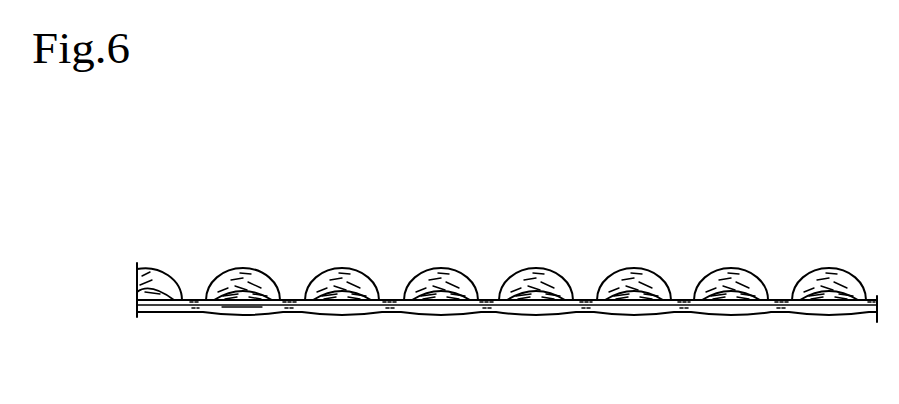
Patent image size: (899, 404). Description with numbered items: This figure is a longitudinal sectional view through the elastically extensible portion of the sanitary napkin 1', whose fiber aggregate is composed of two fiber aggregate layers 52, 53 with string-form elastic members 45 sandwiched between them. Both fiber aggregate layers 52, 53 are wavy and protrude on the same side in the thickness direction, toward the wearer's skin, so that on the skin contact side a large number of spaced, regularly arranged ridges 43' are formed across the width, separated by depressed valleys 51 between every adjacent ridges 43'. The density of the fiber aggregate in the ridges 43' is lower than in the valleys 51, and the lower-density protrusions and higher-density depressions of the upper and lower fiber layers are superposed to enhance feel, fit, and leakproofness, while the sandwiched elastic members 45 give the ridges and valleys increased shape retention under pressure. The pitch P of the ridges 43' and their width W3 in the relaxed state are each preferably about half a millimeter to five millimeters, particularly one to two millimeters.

The sanitary napkin 1' is at (457, 311).
The ridges 43' is at (501, 215).
The elastic members 45 is at (238, 300).
The valleys 51 is at (577, 300).
The fiber aggregate layer 52 is at (531, 290).
The fiber aggregate layer 53 is at (343, 306).
The width of the ridges W3 is at (280, 195).
The pitch of the ridges P is at (441, 195).